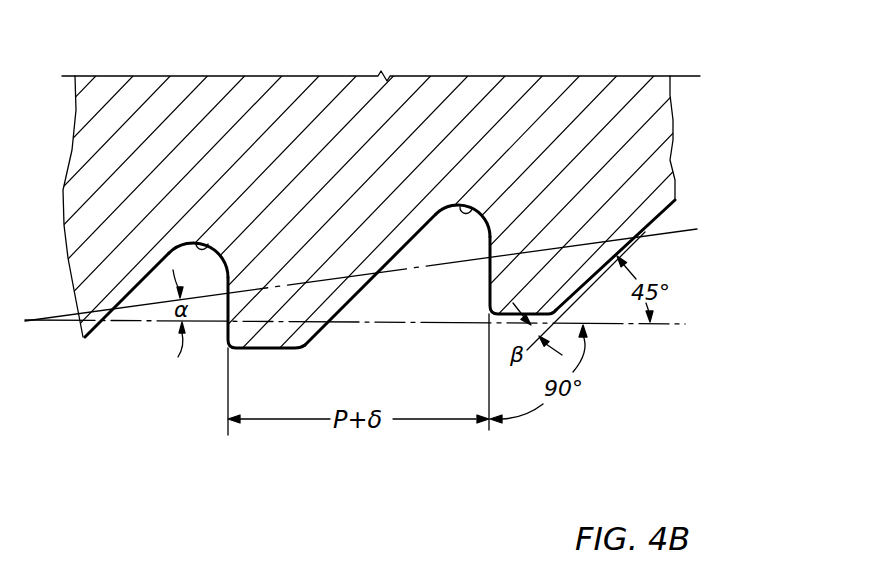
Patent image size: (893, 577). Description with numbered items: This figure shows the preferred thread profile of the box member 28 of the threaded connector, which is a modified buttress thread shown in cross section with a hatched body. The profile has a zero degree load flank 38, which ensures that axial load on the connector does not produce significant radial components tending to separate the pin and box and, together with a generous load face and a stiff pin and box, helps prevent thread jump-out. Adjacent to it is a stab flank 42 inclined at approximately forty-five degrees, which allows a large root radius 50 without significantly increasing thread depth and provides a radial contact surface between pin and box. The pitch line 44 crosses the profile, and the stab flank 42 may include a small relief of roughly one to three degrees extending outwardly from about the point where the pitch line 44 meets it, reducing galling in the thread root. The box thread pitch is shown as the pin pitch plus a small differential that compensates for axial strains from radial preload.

The box member 28 is at (338, 97).
The load flank 38 is at (224, 309).
The stab flank 42 is at (137, 305).
The pitch line 44 is at (697, 229).
The root radius 50 is at (205, 245).